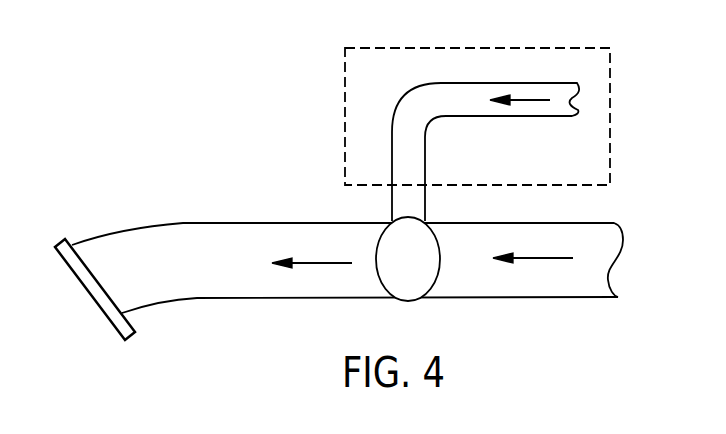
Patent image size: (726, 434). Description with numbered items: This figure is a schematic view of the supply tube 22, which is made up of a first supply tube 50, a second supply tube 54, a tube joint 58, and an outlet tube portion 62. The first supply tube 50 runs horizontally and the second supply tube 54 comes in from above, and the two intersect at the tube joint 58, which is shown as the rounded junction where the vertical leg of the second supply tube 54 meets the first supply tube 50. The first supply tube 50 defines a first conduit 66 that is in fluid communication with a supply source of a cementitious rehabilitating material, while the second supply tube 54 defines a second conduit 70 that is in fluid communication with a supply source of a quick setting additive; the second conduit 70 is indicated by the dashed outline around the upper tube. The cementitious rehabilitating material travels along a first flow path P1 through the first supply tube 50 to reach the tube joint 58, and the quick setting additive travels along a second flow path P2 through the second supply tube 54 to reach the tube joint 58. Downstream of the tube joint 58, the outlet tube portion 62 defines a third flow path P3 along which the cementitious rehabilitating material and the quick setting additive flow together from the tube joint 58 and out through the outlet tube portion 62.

The supply tube 22 is at (166, 150).
The first supply tube 50 is at (557, 293).
The second supply tube 54 is at (390, 143).
The tube joint 58 is at (420, 265).
The outlet tube portion 62 is at (177, 277).
The first conduit 66 is at (502, 289).
The second conduit 70 is at (440, 94).
The first flow path P1 is at (553, 252).
The second flow path P2 is at (533, 102).
The third flow path P3 is at (311, 262).